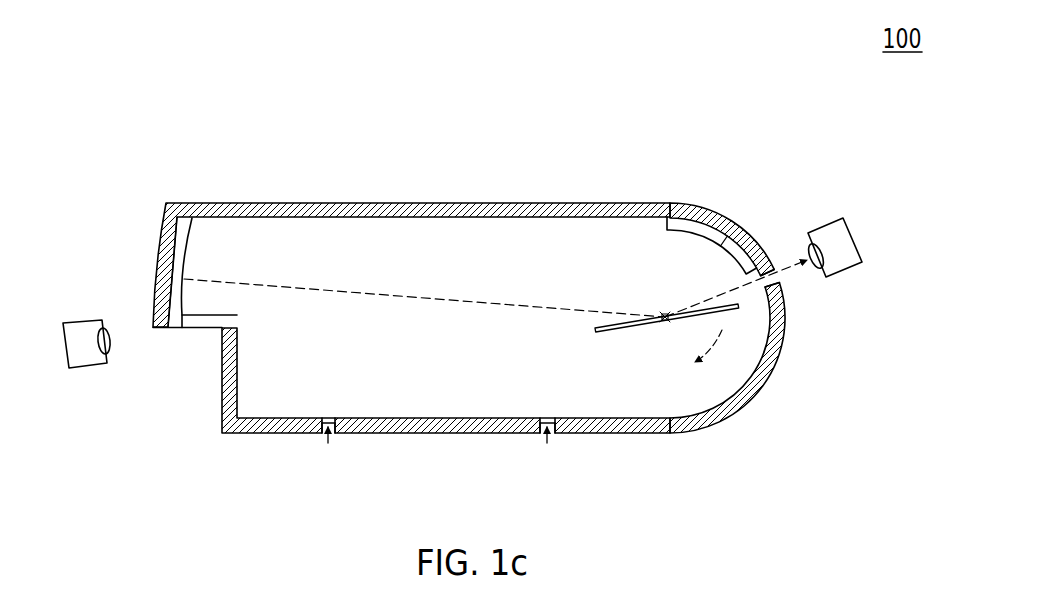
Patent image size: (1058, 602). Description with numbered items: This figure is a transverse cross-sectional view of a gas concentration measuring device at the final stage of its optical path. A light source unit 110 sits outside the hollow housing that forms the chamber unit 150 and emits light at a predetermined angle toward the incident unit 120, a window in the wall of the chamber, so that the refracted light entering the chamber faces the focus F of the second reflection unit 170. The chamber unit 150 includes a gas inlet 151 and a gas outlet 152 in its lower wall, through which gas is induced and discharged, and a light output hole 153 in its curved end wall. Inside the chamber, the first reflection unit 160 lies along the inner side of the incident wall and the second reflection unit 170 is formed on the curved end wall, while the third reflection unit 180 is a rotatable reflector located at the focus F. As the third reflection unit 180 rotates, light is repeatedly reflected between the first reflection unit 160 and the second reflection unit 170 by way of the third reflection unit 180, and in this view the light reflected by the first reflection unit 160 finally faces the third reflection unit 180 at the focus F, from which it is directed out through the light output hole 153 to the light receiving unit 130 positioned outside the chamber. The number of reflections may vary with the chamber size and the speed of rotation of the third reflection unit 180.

The light source unit 110 is at (80, 370).
The incident unit 120 is at (198, 318).
The light receiving unit 130 is at (857, 240).
The chamber unit 150 is at (583, 210).
The gas inlet 151 is at (328, 443).
The gas outlet 152 is at (546, 443).
The light output hole 153 is at (775, 276).
The first reflection unit 160 is at (181, 222).
The second reflection unit 170 is at (738, 226).
The third reflection unit 180 is at (617, 330).
The focus F is at (668, 322).